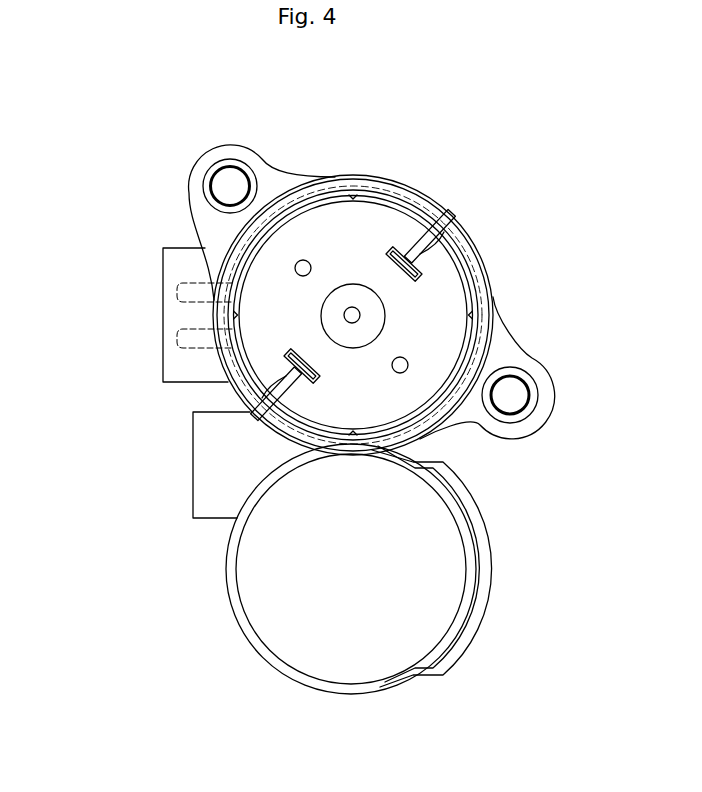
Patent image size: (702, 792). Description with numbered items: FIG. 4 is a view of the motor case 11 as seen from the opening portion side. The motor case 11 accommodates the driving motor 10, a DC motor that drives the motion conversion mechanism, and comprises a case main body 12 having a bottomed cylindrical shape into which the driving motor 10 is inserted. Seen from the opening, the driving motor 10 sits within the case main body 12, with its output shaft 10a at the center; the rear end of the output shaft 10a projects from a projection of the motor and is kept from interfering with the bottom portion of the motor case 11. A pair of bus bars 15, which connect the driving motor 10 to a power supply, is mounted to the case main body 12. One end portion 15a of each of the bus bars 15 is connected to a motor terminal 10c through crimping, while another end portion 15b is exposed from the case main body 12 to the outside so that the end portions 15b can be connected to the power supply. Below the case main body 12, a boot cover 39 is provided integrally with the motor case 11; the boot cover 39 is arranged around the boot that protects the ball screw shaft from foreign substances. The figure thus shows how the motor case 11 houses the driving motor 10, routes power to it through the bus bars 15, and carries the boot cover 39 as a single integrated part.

The driving motor 10 is at (452, 298).
The output shaft 10a is at (360, 315).
The motor terminal 10c is at (432, 238).
The motor case 11 is at (341, 172).
The case main body 12 is at (382, 186).
The bus bars 15 is at (431, 240).
The one end portion 15a is at (389, 250).
The another end portion 15b is at (180, 333).
The boot cover 39 is at (266, 650).